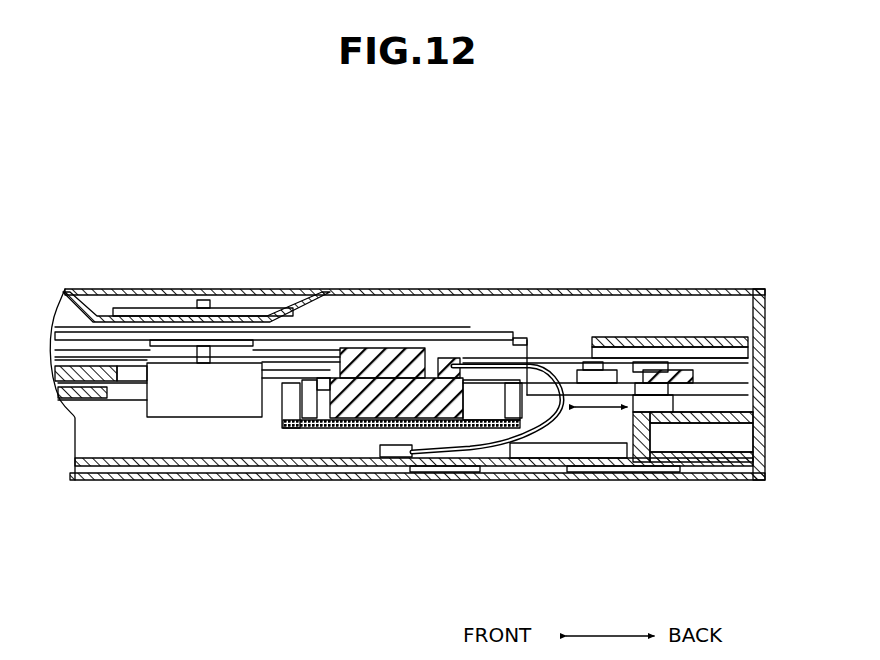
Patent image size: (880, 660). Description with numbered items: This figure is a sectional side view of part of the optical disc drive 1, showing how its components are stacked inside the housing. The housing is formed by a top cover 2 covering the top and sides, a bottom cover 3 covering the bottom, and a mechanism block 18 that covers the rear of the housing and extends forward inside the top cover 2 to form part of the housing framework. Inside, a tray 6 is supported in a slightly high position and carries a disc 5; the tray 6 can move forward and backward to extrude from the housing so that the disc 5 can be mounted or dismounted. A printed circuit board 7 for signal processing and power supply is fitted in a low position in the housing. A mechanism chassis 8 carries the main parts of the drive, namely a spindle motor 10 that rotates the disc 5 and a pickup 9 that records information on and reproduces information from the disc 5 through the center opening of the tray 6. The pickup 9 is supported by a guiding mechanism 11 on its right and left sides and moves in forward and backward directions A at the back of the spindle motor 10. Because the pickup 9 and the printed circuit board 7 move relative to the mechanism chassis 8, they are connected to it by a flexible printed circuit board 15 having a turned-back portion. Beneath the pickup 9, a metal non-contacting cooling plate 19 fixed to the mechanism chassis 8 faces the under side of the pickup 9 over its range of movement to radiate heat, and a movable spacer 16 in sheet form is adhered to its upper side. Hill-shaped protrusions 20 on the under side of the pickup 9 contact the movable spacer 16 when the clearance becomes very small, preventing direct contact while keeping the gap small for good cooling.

The optical disc drive 1 is at (386, 191).
The top cover 2 is at (592, 295).
The bottom cover 3 is at (625, 477).
The disc 5 is at (400, 335).
The tray 6 is at (683, 337).
The printed circuit board 7 is at (553, 460).
The mechanism chassis 8 is at (67, 390).
The pickup 9 is at (400, 357).
The spindle motor 10 is at (167, 380).
The guiding mechanism 11 is at (307, 370).
The flexible printed circuit board 15 is at (490, 443).
The movable spacer 16 is at (282, 413).
The mechanism block 18 is at (757, 393).
The non-contacting cooling plate 19 is at (313, 427).
The protrusions 20 is at (373, 437).